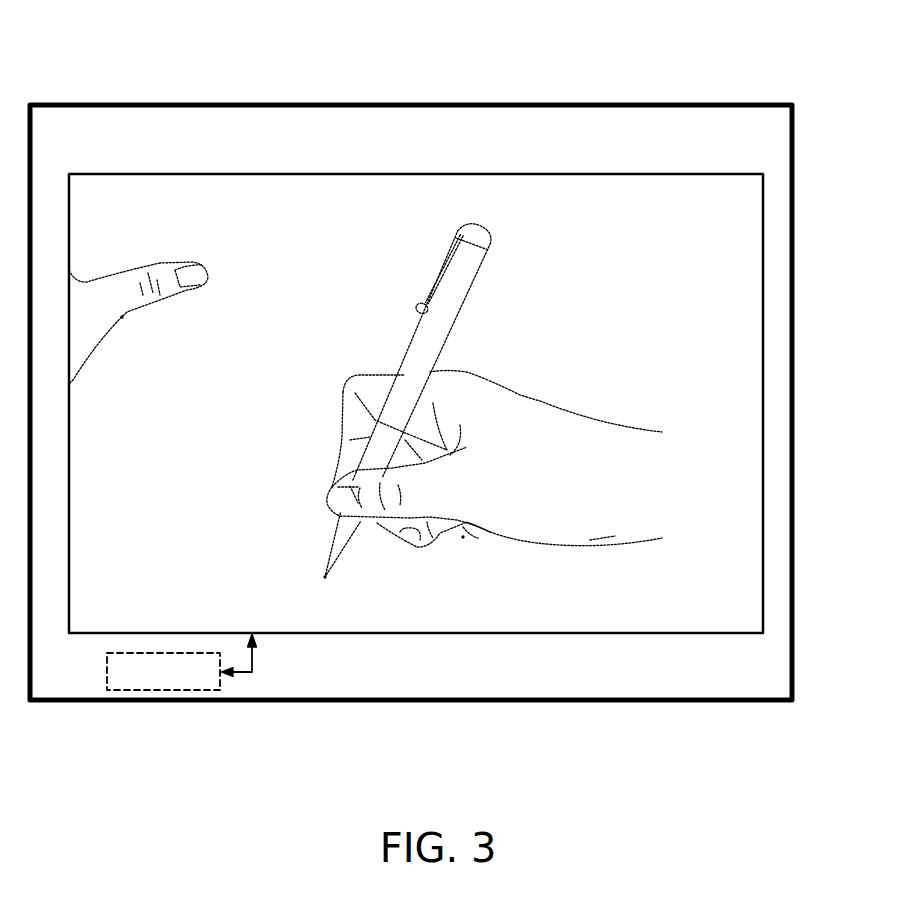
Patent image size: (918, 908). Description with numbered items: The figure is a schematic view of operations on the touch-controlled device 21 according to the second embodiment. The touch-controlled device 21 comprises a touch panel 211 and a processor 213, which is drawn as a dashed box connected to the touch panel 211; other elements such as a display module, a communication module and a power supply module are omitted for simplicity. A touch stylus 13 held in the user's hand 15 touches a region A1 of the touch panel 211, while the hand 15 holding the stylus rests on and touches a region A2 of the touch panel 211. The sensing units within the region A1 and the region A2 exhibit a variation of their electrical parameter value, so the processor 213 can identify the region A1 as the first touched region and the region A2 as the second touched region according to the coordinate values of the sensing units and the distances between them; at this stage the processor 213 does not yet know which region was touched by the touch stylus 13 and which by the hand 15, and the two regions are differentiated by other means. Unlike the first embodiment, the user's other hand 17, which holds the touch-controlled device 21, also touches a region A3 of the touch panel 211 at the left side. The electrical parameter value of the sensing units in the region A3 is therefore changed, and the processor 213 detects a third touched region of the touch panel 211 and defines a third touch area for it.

The touch-controlled device 21 is at (485, 103).
The touch panel 211 is at (218, 173).
The processor 213 is at (107, 677).
The touch stylus 13 is at (444, 327).
The hand 15 is at (543, 402).
The user's hand 17 is at (170, 305).
The region A1 is at (316, 583).
The region A2 is at (464, 545).
The region A3 is at (121, 326).